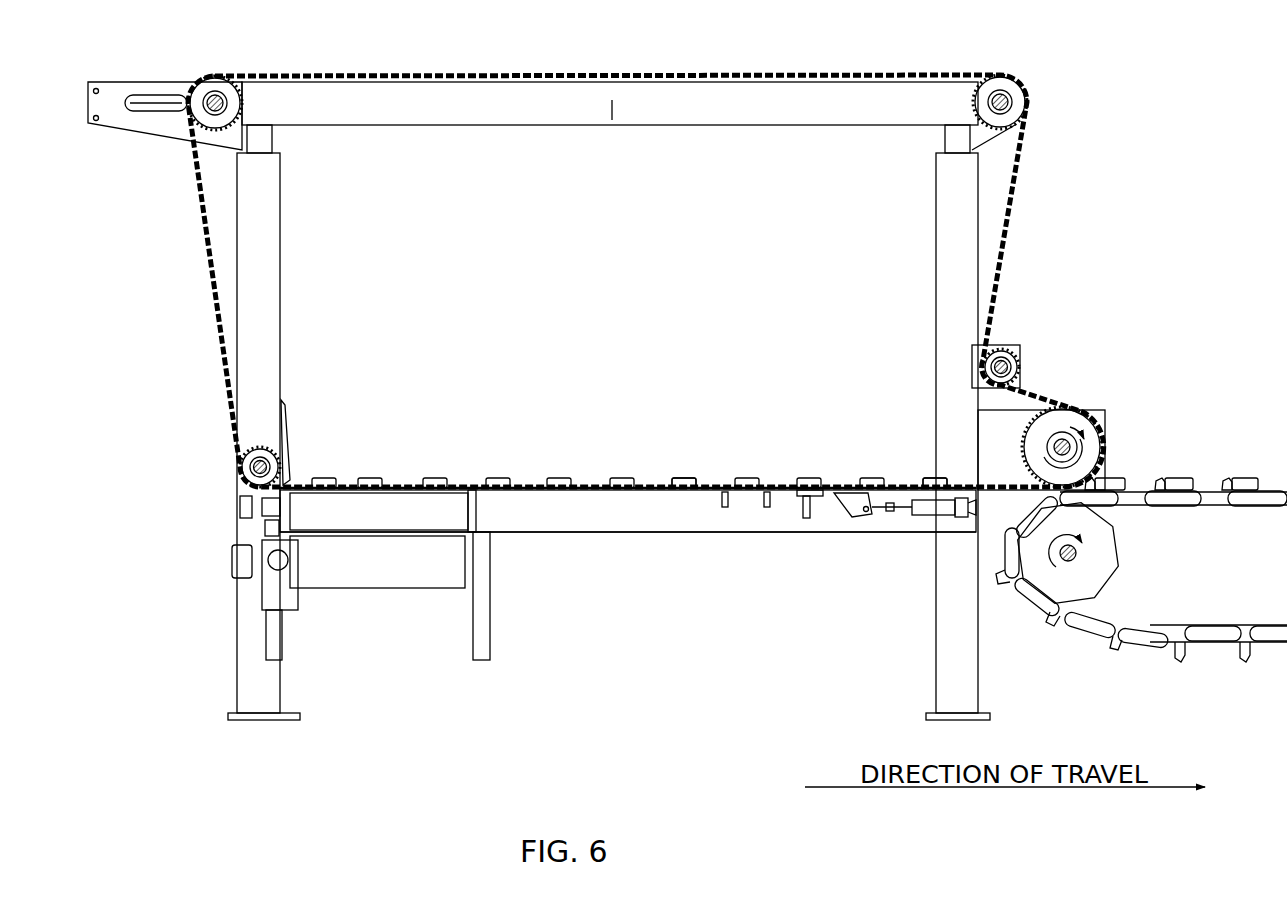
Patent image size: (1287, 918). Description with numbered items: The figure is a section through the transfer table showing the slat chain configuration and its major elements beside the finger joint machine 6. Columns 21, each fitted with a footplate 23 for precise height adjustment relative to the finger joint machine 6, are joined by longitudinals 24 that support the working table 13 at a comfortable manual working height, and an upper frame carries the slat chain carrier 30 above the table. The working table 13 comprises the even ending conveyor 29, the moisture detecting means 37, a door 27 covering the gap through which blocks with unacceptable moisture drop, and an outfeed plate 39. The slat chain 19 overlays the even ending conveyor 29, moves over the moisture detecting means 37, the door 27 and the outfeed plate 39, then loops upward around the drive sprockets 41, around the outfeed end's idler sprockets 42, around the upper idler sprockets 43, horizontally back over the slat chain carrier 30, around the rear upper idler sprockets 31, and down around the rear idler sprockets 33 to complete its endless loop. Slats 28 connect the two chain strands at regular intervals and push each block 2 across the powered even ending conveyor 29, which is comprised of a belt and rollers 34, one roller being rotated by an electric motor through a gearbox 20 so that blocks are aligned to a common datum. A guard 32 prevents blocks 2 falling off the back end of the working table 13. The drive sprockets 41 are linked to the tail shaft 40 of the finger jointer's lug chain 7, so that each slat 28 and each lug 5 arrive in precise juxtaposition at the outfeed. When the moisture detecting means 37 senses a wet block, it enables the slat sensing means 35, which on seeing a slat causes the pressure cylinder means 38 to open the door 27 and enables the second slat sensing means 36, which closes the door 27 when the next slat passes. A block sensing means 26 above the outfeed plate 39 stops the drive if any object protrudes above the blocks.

The block 2 is at (372, 477).
The lug 5 is at (1225, 477).
The finger joint machine 6 is at (1221, 561).
The lug chain 7 is at (1222, 645).
The working table 13 is at (572, 519).
The slat chain 19 is at (200, 232).
The gearbox 20 is at (230, 560).
The column 21 is at (237, 648).
The footplate 23 is at (230, 717).
The longitudinal 24 is at (640, 535).
The block sensing means 26 is at (925, 477).
The door 27 is at (852, 512).
The slat 28 is at (668, 477).
The even ending conveyor 29 is at (378, 592).
The slat chain carrier 30 is at (513, 113).
The rear upper idler sprocket 31 is at (205, 80).
The guard 32 is at (290, 422).
The rear idler sprocket 33 is at (245, 463).
The roller 34 is at (440, 512).
The slat sensing means 35 is at (722, 509).
The slat sensing means 36 is at (764, 509).
The moisture detecting means 37 is at (806, 520).
The pressure cylinder means 38 is at (932, 518).
The outfeed plate 39 is at (990, 507).
The tail shaft 40 is at (1115, 570).
The drive sprocket 41 is at (1050, 432).
The outfeed end idler sprocket 42 is at (1018, 348).
The upper idler sprocket 43 is at (1012, 117).